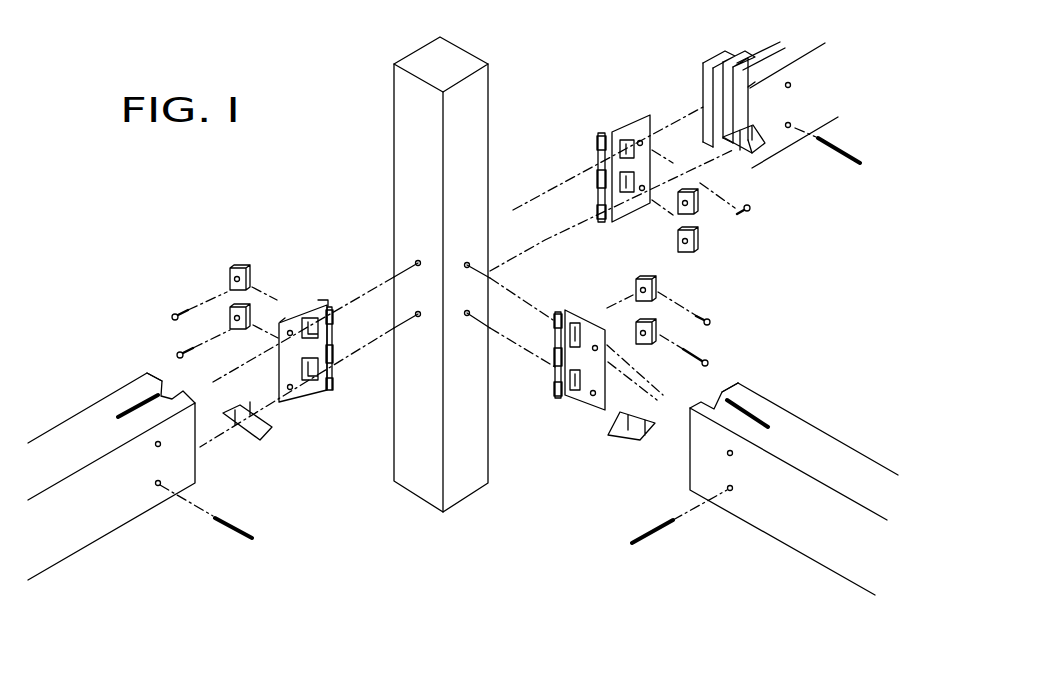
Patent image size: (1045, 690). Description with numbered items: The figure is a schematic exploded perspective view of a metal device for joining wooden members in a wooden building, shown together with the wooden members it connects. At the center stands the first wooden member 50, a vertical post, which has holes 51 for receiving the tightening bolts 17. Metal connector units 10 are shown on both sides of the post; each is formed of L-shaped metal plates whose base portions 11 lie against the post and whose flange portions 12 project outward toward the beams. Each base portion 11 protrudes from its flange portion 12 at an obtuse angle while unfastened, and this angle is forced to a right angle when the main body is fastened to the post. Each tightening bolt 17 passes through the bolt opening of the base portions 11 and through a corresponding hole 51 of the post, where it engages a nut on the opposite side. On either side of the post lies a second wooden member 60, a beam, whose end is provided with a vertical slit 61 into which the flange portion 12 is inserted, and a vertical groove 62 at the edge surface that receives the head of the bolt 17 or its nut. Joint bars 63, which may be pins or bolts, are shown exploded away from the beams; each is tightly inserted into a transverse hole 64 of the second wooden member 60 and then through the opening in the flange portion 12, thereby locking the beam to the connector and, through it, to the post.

The connector assembly 10 is at (282, 320).
The base portion 11 is at (318, 302).
The flange portion 12 is at (303, 397).
The tightening bolt 17 is at (175, 313).
The first wooden member 50 is at (463, 490).
The hole 51 is at (417, 262).
The second wooden member 60 is at (88, 540).
The vertical slit 61 is at (120, 413).
The vertical groove 62 is at (163, 397).
The joint bar 63 is at (233, 532).
The transverse hole 64 is at (790, 86).